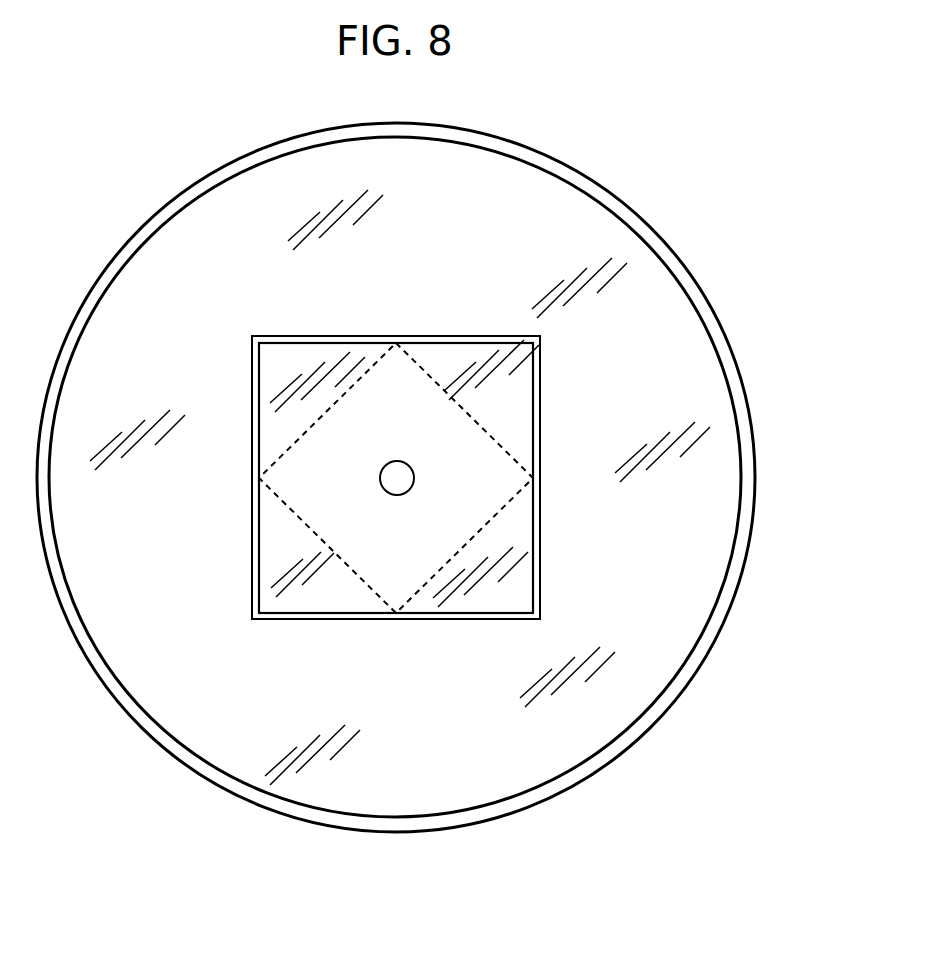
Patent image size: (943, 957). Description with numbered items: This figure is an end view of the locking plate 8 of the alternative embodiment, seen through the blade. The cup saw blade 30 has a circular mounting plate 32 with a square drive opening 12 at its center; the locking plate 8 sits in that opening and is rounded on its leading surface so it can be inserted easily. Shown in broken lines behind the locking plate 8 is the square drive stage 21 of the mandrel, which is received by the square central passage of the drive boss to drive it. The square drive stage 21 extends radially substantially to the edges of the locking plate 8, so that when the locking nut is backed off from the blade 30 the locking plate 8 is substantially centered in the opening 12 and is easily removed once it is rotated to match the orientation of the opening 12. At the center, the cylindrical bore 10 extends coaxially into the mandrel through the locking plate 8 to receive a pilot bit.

The locking plate 8 is at (522, 385).
The cylindrical bore 10 is at (394, 481).
The drive opening 12 is at (535, 526).
The square drive stage 21 is at (314, 533).
The cup saw blade 30 is at (728, 595).
The mounting plate 32 is at (266, 711).